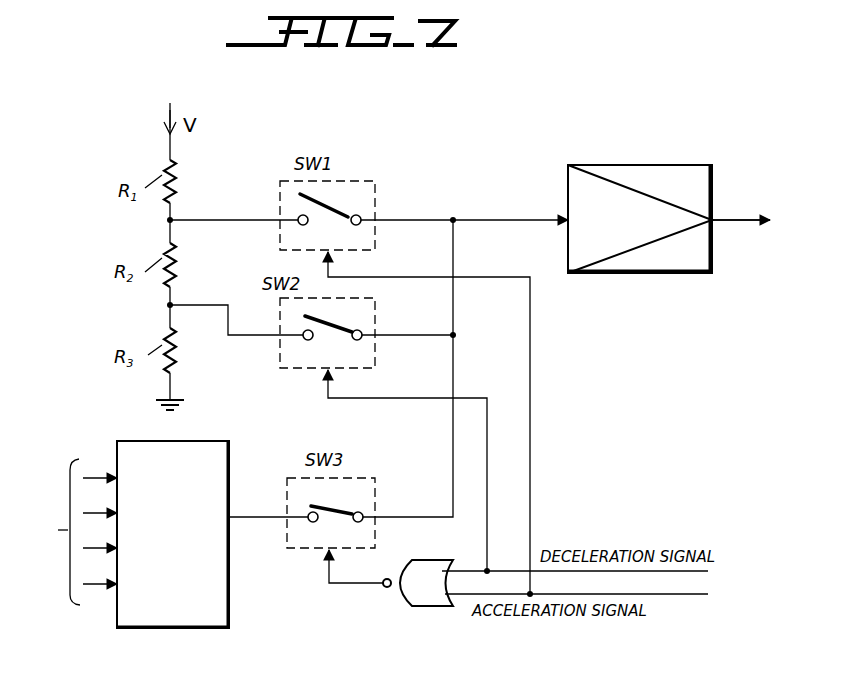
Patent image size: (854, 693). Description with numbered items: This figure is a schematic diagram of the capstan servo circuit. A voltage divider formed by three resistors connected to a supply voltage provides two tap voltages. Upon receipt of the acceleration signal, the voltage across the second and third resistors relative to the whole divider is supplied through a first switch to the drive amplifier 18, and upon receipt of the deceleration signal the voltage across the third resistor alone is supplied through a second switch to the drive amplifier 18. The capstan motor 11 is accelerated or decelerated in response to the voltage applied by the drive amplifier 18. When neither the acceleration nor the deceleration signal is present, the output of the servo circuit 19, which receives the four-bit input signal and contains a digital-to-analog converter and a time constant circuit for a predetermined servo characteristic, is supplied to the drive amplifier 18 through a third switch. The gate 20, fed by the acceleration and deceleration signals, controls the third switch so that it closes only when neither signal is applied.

The capstan motor 11 is at (755, 221).
The drive amplifier 18 is at (615, 273).
The servo circuit 19 is at (157, 628).
The gate 20 is at (425, 608).